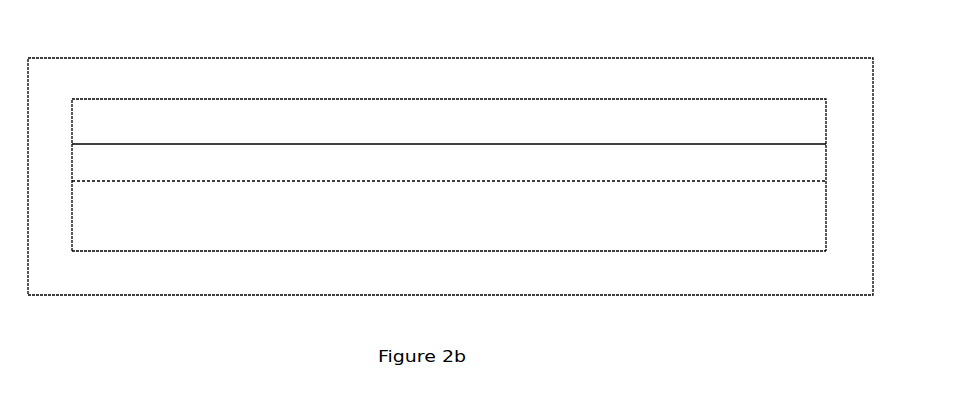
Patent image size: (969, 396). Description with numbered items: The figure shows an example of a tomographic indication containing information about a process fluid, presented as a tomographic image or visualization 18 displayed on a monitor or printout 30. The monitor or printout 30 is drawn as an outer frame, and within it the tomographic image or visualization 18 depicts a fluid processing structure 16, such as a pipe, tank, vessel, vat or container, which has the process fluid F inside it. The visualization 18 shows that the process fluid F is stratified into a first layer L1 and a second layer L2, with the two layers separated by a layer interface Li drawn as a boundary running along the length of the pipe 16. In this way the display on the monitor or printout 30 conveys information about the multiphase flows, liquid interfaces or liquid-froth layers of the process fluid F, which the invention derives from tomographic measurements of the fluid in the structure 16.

The monitor or printout 30 is at (392, 57).
The tomographic image or visualization 18 is at (308, 88).
The fluid processing structure 16 is at (635, 99).
The process fluid F is at (465, 144).
The first layer L1 is at (454, 186).
The second layer L2 is at (675, 204).
The layer interface Li is at (449, 263).